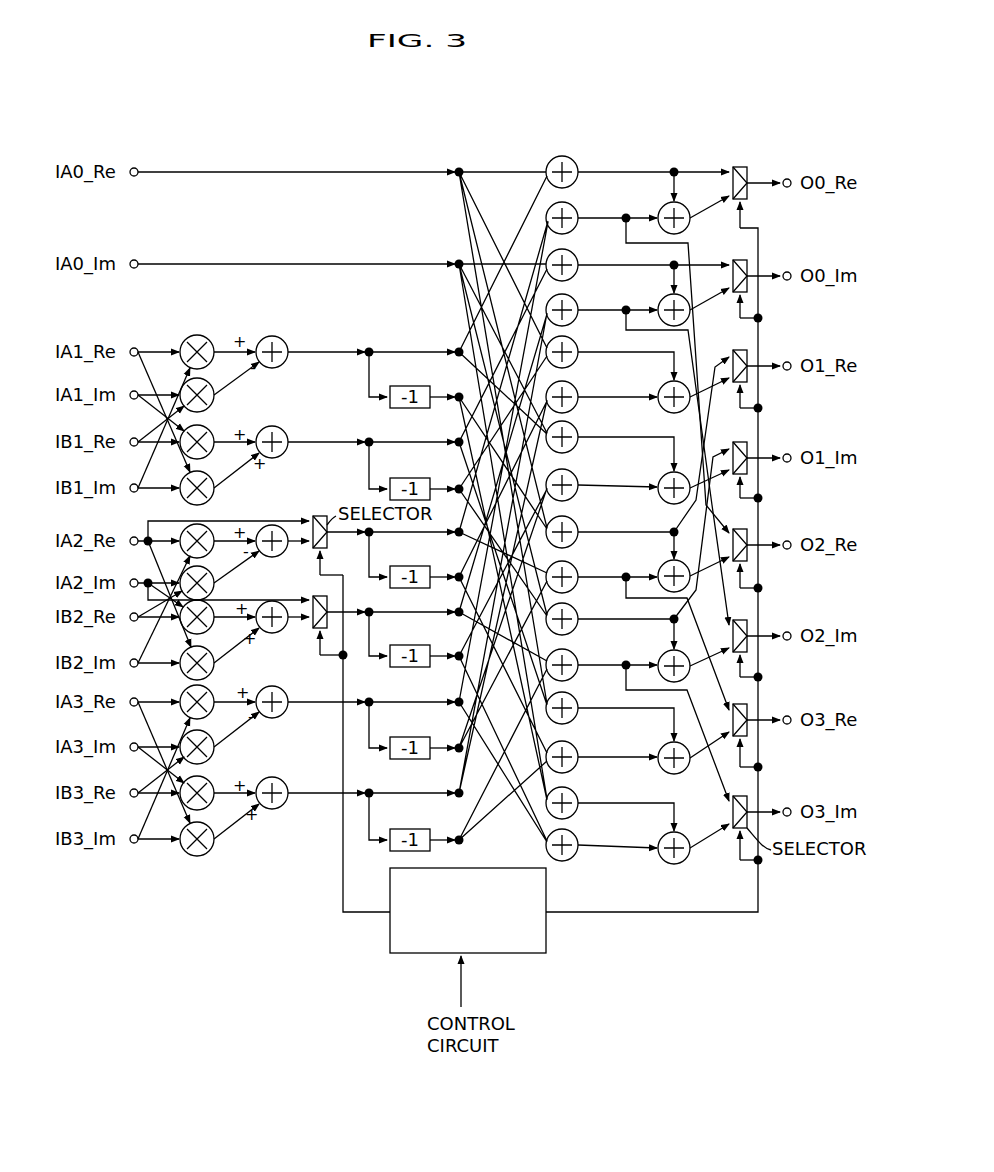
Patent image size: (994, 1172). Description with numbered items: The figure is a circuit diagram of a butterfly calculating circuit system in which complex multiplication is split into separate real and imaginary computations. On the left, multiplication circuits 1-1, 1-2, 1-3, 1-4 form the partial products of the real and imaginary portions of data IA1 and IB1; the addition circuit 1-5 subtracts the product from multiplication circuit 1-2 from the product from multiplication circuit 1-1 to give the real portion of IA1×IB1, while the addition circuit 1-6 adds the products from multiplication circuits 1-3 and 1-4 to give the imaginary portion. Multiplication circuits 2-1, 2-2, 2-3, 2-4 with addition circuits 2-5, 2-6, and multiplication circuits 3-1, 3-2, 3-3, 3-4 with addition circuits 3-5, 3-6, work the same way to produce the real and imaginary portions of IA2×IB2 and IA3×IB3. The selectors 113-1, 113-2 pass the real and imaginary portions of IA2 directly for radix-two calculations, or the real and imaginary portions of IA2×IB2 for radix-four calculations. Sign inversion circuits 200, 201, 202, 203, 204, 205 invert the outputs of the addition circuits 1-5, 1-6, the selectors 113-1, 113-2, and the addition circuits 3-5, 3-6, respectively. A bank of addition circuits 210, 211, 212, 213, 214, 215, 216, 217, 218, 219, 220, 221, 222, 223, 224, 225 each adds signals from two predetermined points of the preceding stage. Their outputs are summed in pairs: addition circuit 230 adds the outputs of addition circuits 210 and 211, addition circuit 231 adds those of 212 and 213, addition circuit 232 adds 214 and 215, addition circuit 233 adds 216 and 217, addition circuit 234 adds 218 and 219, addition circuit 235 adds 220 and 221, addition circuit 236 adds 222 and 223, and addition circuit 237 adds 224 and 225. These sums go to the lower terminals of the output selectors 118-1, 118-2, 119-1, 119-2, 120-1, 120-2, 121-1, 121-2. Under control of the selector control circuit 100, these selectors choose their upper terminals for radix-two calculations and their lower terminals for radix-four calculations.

The multiplication circuit 1-1 is at (209, 341).
The multiplication circuit 1-2 is at (214, 396).
The multiplication circuit 1-3 is at (210, 431).
The multiplication circuit 1-4 is at (214, 489).
The addition circuit 1-5 is at (284, 341).
The addition circuit 1-6 is at (284, 432).
The multiplication circuit 2-1 is at (209, 530).
The multiplication circuit 2-2 is at (214, 591).
The multiplication circuit 2-3 is at (209, 606).
The multiplication circuit 2-4 is at (214, 663).
The addition circuit 2-5 is at (283, 530).
The addition circuit 2-6 is at (283, 629).
The multiplication circuit 3-1 is at (209, 690).
The multiplication circuit 3-2 is at (214, 749).
The multiplication circuit 3-3 is at (209, 781).
The multiplication circuit 3-4 is at (214, 839).
The addition circuit 3-5 is at (284, 691).
The addition circuit 3-6 is at (283, 781).
The selector 113-1 is at (318, 516).
The selector 113-2 is at (323, 595).
The selector control circuit 100 is at (546, 930).
The selector 118-1 is at (748, 180).
The selector 118-2 is at (748, 273).
The selector 119-1 is at (748, 363).
The selector 119-2 is at (748, 455).
The selector 120-1 is at (748, 542).
The selector 120-2 is at (748, 633).
The selector 121-1 is at (748, 717).
The selector 121-2 is at (748, 809).
The sign inversion circuit 200 is at (408, 386).
The sign inversion circuit 201 is at (408, 478).
The sign inversion circuit 202 is at (408, 566).
The sign inversion circuit 203 is at (408, 645).
The sign inversion circuit 204 is at (408, 737).
The sign inversion circuit 205 is at (408, 829).
The addition circuit 210 is at (573, 161).
The addition circuit 211 is at (573, 207).
The addition circuit 212 is at (573, 254).
The addition circuit 213 is at (573, 299).
The addition circuit 214 is at (573, 341).
The addition circuit 215 is at (573, 386).
The addition circuit 216 is at (573, 426).
The addition circuit 217 is at (573, 474).
The addition circuit 218 is at (573, 521).
The addition circuit 219 is at (573, 566).
The addition circuit 220 is at (573, 608).
The addition circuit 221 is at (573, 654).
The addition circuit 222 is at (573, 697).
The addition circuit 223 is at (573, 746).
The addition circuit 224 is at (573, 792).
The addition circuit 225 is at (573, 834).
The addition circuit 230 is at (663, 207).
The addition circuit 231 is at (663, 299).
The addition circuit 232 is at (663, 386).
The addition circuit 233 is at (663, 477).
The addition circuit 234 is at (663, 565).
The addition circuit 235 is at (663, 655).
The addition circuit 236 is at (663, 747).
The addition circuit 237 is at (663, 837).